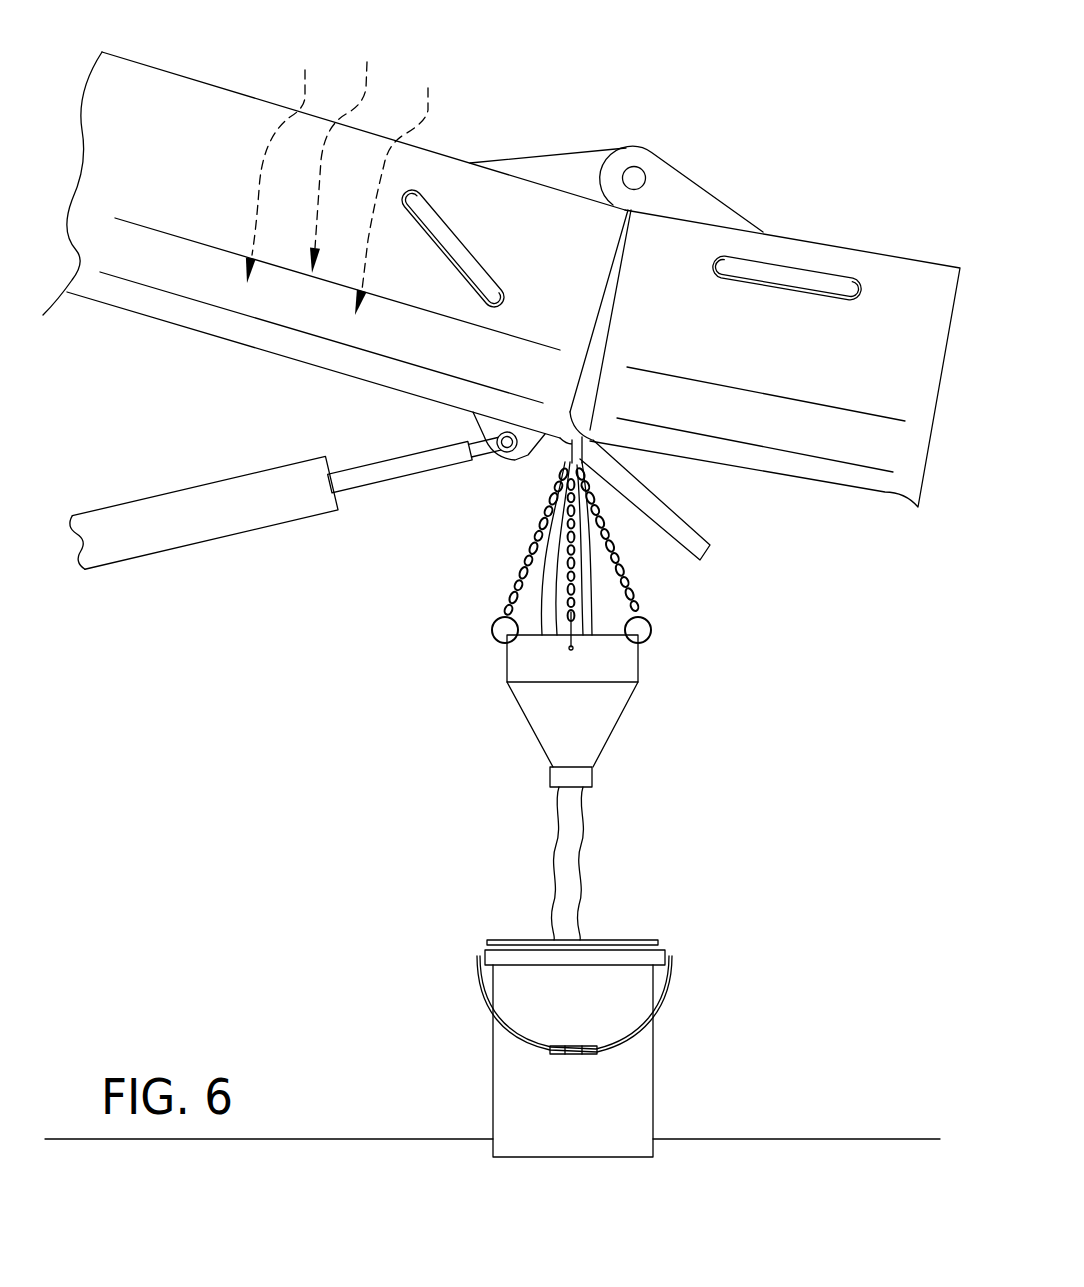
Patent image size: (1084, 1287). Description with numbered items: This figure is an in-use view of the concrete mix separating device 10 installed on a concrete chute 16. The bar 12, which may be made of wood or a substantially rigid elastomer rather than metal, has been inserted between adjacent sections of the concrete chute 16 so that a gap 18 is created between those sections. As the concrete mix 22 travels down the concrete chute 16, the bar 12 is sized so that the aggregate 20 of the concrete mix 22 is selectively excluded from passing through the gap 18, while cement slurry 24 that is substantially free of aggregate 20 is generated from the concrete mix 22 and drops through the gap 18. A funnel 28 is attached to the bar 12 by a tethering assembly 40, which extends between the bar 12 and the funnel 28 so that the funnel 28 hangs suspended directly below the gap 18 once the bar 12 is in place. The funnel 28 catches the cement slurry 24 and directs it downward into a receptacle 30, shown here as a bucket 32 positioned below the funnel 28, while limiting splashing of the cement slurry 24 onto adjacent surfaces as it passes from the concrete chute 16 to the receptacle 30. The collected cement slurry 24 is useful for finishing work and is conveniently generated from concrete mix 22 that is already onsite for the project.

The concrete mix separating device 10 is at (343, 734).
The bar 12 is at (700, 508).
The concrete chute 16 is at (212, 62).
The gap 18 is at (610, 318).
The aggregate 20 is at (400, 183).
The concrete mix 22 is at (284, 157).
The cement slurry 24 is at (650, 820).
The funnel 28 is at (630, 700).
The receptacle 30 is at (680, 1028).
The bucket 32 is at (657, 1085).
The tethering assembly 40 is at (509, 538).